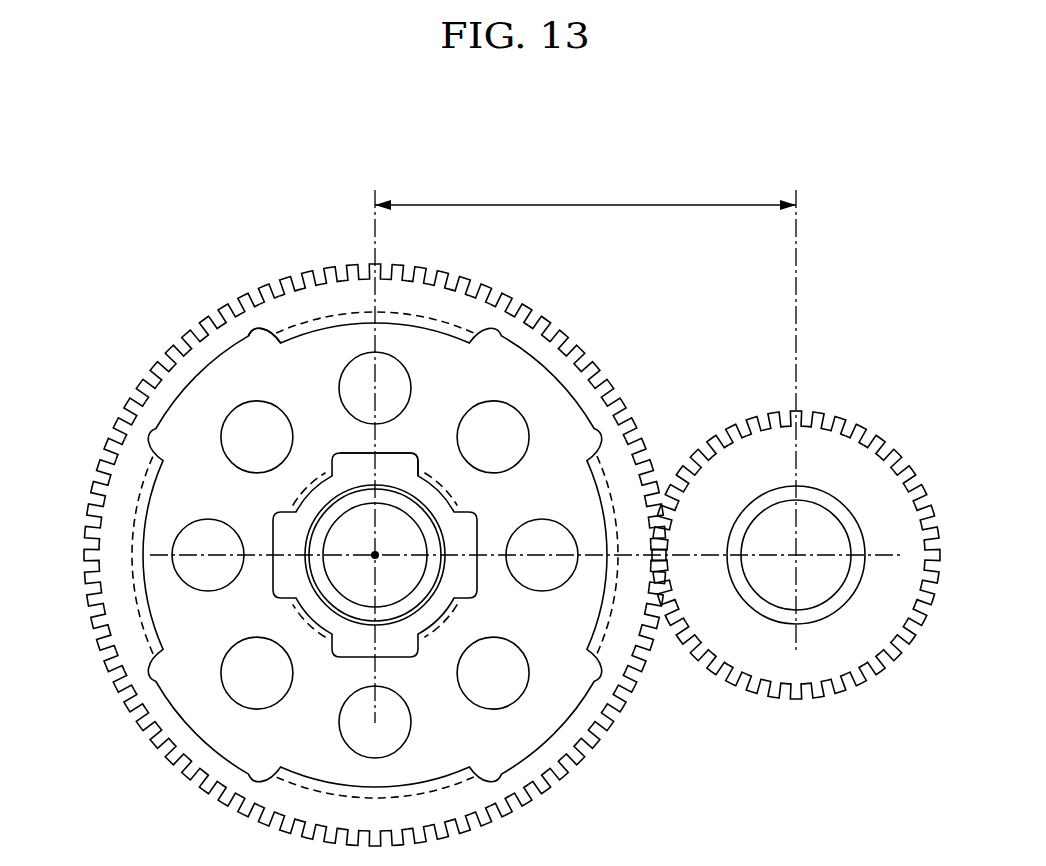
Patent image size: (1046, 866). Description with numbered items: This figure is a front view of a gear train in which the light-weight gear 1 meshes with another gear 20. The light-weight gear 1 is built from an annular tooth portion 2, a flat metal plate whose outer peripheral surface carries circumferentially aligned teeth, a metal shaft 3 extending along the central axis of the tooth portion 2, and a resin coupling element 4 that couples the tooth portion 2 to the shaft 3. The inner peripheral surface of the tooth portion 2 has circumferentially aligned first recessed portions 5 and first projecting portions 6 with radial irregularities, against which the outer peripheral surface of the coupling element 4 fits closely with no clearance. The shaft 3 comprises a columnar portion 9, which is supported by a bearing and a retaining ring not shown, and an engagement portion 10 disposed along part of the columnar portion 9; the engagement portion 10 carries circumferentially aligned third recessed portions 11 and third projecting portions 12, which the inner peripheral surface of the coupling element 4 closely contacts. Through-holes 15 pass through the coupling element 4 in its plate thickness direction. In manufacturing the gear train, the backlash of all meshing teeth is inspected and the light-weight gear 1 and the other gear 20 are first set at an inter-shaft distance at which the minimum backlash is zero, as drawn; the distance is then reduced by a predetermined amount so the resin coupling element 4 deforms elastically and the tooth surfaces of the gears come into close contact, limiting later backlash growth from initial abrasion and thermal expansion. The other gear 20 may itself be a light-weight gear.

The light-weight gear 1 is at (124, 185).
The tooth portion 2 is at (162, 330).
The shaft 3 is at (308, 602).
The coupling element 4 is at (555, 445).
The first recessed portions 5 is at (247, 350).
The first projecting portions 6 is at (298, 341).
The columnar portion 9 is at (352, 622).
The engagement portion 10 is at (268, 520).
The third recessed portions 11 is at (450, 498).
The third projecting portions 12 is at (392, 455).
The through-holes 15 is at (496, 408).
The other gear 20 is at (856, 400).